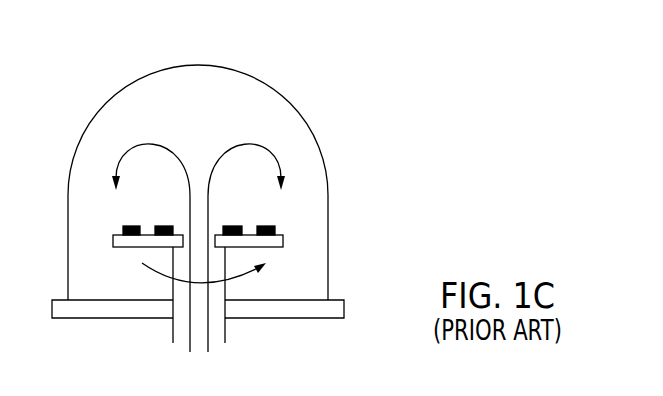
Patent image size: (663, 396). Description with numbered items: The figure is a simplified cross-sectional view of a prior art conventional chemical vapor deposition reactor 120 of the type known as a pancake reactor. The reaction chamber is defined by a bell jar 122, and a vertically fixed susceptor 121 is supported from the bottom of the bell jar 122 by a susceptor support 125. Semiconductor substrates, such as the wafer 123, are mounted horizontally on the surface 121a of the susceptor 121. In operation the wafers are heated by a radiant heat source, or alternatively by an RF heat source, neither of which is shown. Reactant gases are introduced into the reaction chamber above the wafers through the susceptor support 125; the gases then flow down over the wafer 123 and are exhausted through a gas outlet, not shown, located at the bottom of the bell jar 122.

The chemical vapor deposition reactor 120 is at (279, 50).
The bell jar 122 is at (306, 123).
The susceptor 121 is at (279, 248).
The surface of susceptor 121a is at (283, 240).
The wafer 123 is at (268, 226).
The susceptor support 125 is at (226, 295).